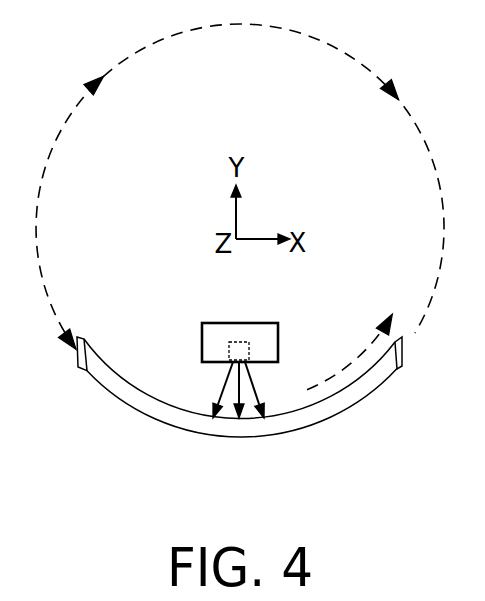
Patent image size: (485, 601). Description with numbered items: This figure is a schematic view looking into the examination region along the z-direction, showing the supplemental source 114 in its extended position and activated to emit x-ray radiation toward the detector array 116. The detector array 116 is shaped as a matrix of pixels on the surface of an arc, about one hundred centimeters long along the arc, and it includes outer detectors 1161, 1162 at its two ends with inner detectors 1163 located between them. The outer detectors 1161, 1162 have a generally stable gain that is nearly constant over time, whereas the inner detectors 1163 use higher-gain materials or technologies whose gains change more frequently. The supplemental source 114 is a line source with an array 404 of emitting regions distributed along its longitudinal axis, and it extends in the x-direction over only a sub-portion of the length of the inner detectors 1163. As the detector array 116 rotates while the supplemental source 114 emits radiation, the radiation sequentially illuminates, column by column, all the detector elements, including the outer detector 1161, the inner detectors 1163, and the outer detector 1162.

The supplemental source 114 is at (202, 333).
The array of emitting regions 404 is at (242, 342).
The detector array 116 is at (244, 417).
The outer detector 1161 is at (82, 372).
The outer detector 1162 is at (398, 369).
The inner detectors 1163 is at (302, 423).